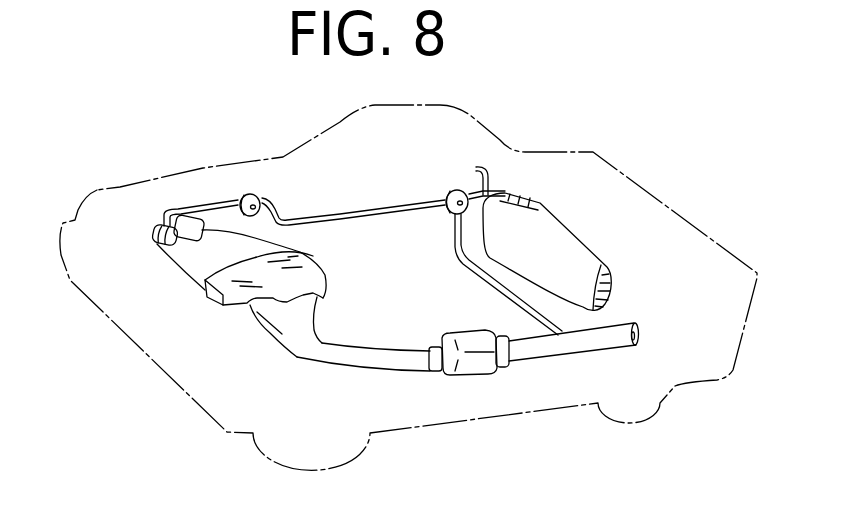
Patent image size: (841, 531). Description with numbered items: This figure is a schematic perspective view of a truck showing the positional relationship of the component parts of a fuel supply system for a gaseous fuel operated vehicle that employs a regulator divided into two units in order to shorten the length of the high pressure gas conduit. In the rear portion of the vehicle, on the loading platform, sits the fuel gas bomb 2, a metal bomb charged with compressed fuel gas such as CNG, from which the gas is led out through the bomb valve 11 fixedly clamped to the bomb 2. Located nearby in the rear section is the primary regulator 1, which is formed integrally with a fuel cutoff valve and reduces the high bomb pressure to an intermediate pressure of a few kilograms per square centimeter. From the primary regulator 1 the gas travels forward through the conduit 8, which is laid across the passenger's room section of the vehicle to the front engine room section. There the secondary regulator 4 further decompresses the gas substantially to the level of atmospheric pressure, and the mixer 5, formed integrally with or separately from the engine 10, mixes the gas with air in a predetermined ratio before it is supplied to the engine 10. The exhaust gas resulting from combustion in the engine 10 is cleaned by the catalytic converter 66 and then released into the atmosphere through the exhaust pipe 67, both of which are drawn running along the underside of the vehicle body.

The primary regulator 1 is at (454, 190).
The fuel gas bomb 2 is at (574, 233).
The secondary regulator 4 is at (247, 193).
The mixer 5 is at (154, 232).
The conduit 8 is at (369, 210).
The engine 10 is at (218, 303).
The bomb valve 11 is at (462, 376).
The catalytic converter 66 is at (541, 358).
The exhaust pipe 67 is at (493, 283).